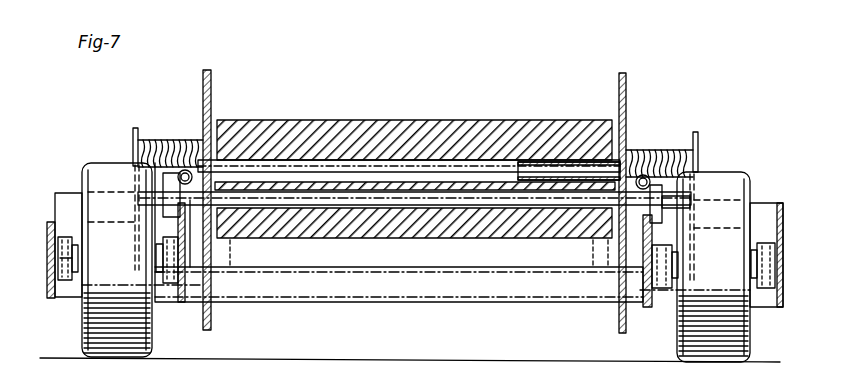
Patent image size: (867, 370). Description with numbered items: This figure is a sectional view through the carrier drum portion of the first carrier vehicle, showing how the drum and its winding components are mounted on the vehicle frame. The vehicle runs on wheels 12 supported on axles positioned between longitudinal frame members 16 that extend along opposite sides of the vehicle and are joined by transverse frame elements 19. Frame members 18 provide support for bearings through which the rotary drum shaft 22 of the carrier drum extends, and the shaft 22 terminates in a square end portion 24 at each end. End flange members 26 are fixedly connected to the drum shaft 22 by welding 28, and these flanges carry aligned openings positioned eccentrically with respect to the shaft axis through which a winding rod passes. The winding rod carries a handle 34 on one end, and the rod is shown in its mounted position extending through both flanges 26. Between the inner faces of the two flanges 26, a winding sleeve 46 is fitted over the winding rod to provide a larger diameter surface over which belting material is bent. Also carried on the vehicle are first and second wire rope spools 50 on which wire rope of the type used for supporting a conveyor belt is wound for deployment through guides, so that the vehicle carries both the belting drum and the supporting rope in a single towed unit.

The wheels 12 is at (84, 337).
The longitudinal frame member 16 is at (50, 232).
The frame members 18 is at (170, 302).
The transverse frame elements 19 is at (385, 270).
The rotary drum shaft 22 is at (275, 210).
The square end portion 24 is at (138, 200).
The end flange members 26 is at (203, 85).
The welding 28 is at (185, 247).
The handle 34 is at (638, 160).
The winding sleeve 46 is at (342, 165).
The wire rope spools 50 is at (133, 127).